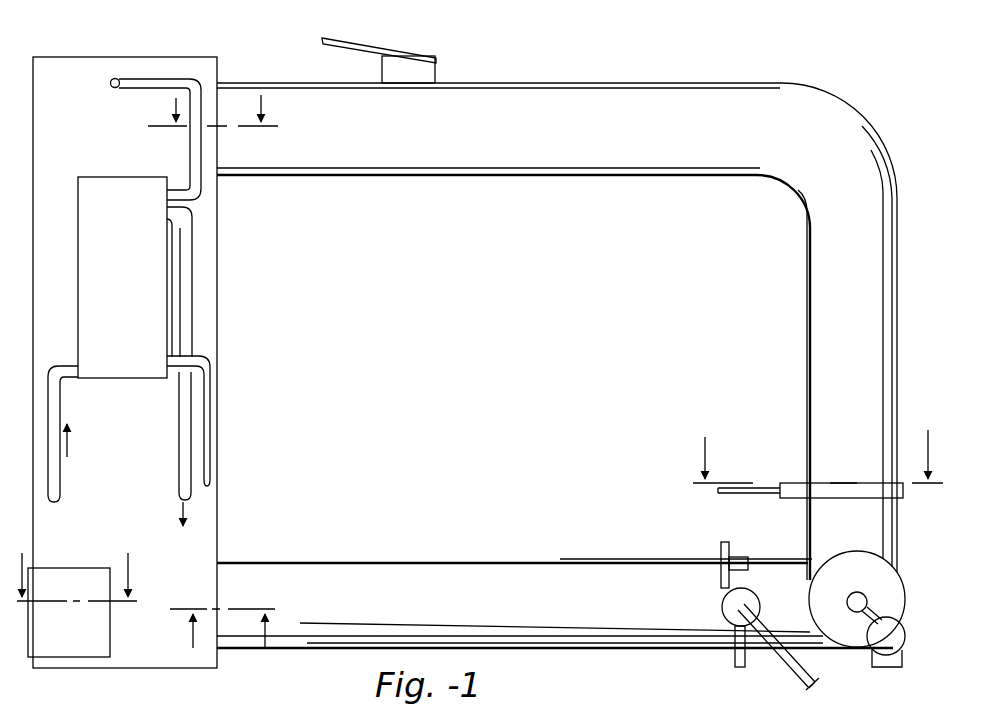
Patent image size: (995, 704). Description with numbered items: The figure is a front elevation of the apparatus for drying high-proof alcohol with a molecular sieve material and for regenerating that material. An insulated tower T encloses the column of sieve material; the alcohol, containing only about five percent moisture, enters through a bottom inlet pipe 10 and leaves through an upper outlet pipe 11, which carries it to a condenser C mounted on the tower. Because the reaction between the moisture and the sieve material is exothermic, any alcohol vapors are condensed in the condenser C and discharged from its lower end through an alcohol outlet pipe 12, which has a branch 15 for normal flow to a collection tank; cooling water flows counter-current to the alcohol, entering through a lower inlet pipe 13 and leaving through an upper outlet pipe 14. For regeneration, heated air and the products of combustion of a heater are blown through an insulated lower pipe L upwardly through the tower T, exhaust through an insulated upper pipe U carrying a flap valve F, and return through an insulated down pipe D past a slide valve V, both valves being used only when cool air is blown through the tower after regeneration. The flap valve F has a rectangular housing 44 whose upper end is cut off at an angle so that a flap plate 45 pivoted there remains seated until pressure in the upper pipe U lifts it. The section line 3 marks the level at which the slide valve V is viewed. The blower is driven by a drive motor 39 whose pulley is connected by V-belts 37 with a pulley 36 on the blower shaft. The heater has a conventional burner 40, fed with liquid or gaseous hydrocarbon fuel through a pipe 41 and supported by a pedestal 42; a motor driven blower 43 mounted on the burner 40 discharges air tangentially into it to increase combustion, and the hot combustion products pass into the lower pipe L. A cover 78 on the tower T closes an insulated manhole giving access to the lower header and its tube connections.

The section line 3- 3 is at (811, 442).
The bottom inlet pipe 10 is at (140, 637).
The upper outlet pipe 11 is at (142, 80).
The alcohol outlet pipe 12 is at (208, 367).
The lower inlet pipe 13 is at (60, 476).
The upper outlet pipe 14 is at (190, 220).
The branch 15 is at (93, 566).
The pump wheel 36 is at (858, 592).
The V-belts 37 is at (865, 618).
The drive motor 39 is at (904, 637).
The burner 40 is at (722, 606).
The pipe 41 is at (798, 671).
The pedestal 42 is at (735, 658).
The motor driven blower 43 is at (721, 553).
The rectangular housing 44 is at (382, 68).
The flap plate 45 is at (402, 62).
The cover 78 is at (82, 644).
The insulated tower T is at (252, 272).
The condenser C is at (125, 262).
The upper pipe U is at (565, 178).
The down pipe D is at (806, 295).
The lower pipe L is at (419, 561).
The slide valve V is at (797, 480).
The flap valve F is at (421, 52).